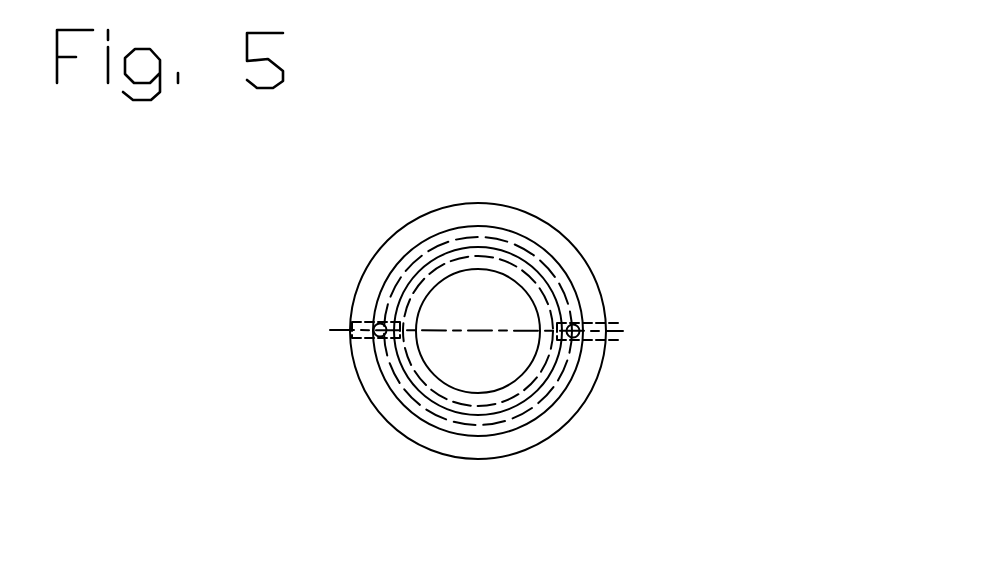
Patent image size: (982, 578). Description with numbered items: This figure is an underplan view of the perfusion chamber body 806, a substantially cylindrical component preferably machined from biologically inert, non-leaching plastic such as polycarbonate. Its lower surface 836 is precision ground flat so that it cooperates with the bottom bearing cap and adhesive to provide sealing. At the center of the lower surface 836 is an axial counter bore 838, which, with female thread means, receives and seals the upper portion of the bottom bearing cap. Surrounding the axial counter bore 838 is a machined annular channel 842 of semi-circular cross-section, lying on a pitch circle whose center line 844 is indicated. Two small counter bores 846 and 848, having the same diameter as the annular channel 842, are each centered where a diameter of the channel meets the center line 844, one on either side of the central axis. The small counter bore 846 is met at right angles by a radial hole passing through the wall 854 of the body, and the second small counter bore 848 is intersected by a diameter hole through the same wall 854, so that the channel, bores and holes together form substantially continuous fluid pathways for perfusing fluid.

The perfusion chamber body 806 is at (382, 272).
The lower surface 836 is at (563, 253).
The annular channel 842 is at (383, 307).
The center line 844 is at (573, 308).
The small counter bore 846 is at (372, 325).
The second small counter bore 848 is at (583, 327).
The axial counter bore 838 is at (510, 349).
The wall 854 is at (378, 390).